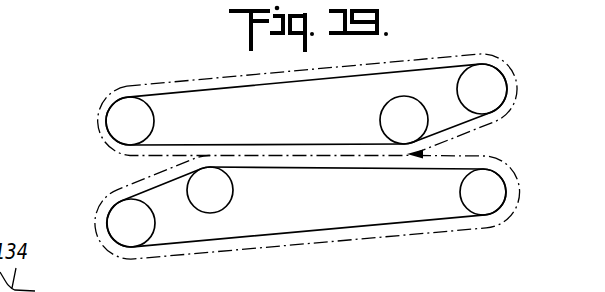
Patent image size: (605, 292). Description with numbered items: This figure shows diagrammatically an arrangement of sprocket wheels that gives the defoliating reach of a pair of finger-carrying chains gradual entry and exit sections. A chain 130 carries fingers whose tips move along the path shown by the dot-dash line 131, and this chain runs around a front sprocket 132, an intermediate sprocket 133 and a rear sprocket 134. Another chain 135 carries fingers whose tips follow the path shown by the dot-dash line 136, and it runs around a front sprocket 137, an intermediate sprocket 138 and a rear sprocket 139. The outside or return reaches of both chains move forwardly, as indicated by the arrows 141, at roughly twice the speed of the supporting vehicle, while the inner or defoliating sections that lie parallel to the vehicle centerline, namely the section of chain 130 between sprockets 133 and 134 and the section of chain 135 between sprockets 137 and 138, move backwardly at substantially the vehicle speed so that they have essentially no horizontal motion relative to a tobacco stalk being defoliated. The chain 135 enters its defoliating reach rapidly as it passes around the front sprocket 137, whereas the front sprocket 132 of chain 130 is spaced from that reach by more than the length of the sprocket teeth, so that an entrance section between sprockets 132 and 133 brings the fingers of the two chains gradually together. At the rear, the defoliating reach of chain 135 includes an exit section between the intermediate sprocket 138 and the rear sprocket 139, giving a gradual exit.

The chain 130 is at (420, 68).
The dot-dash line 131 is at (513, 68).
The front sprocket 132 is at (497, 90).
The intermediate sprocket 133 is at (391, 108).
The rear sprocket 134 is at (118, 117).
The chain 135 is at (388, 229).
The dot-dash line 136 is at (462, 230).
The front sprocket 137 is at (495, 194).
The intermediate sprocket 138 is at (220, 189).
The rear sprocket 139 is at (122, 233).
The arrows 141 is at (258, 63).